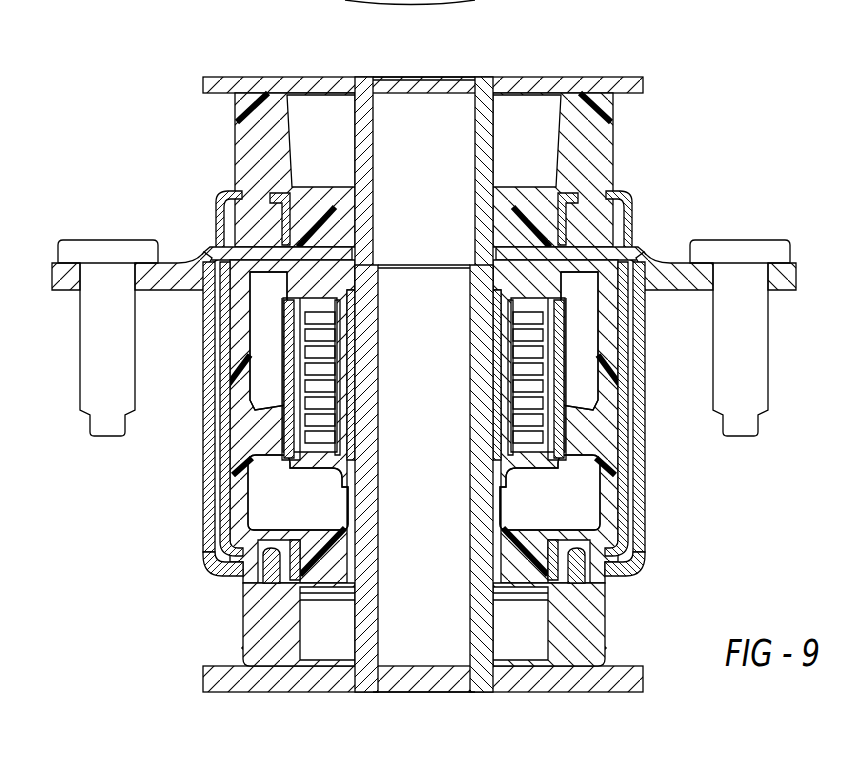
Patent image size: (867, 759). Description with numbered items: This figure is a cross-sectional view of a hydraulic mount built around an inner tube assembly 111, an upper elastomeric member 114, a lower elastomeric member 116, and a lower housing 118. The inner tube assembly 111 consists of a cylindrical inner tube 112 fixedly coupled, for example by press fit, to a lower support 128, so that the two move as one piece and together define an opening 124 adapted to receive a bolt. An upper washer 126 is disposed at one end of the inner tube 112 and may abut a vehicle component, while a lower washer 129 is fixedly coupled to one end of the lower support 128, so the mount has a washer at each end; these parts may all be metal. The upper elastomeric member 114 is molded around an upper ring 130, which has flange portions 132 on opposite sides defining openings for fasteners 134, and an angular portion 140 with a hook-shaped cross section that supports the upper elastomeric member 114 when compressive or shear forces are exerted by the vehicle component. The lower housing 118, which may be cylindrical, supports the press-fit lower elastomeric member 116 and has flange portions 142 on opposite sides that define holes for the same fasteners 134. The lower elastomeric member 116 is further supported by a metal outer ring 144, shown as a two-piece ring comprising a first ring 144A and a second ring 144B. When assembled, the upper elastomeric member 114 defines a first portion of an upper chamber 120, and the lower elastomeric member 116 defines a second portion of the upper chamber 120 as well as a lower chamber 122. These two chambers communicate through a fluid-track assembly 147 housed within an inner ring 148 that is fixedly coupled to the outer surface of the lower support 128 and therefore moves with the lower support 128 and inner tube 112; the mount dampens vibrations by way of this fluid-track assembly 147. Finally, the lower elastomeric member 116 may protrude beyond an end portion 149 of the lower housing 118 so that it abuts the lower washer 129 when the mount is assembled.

The inner tube assembly 111 is at (388, 314).
The inner tube 112 is at (476, 137).
The upper elastomeric member 114 is at (616, 137).
The lower elastomeric member 116 is at (592, 380).
The lower housing 118 is at (205, 500).
The upper chamber 120 is at (600, 245).
The lower chamber 122 is at (583, 491).
The opening 124 is at (418, 124).
The upper washer 126 is at (628, 77).
The lower support 128 is at (605, 617).
The lower washer 129 is at (605, 694).
The upper ring 130 is at (188, 250).
The flange portions 132 is at (49, 268).
The fasteners 134 is at (80, 366).
The angular portion 140 is at (613, 208).
The flange portions 142 is at (70, 292).
The outer ring 144 is at (218, 388).
The first ring 144A is at (632, 368).
The second ring 144B is at (622, 558).
The fluid-track assembly 147 is at (283, 300).
The inner ring 148 is at (288, 432).
The end portion 149 is at (222, 585).